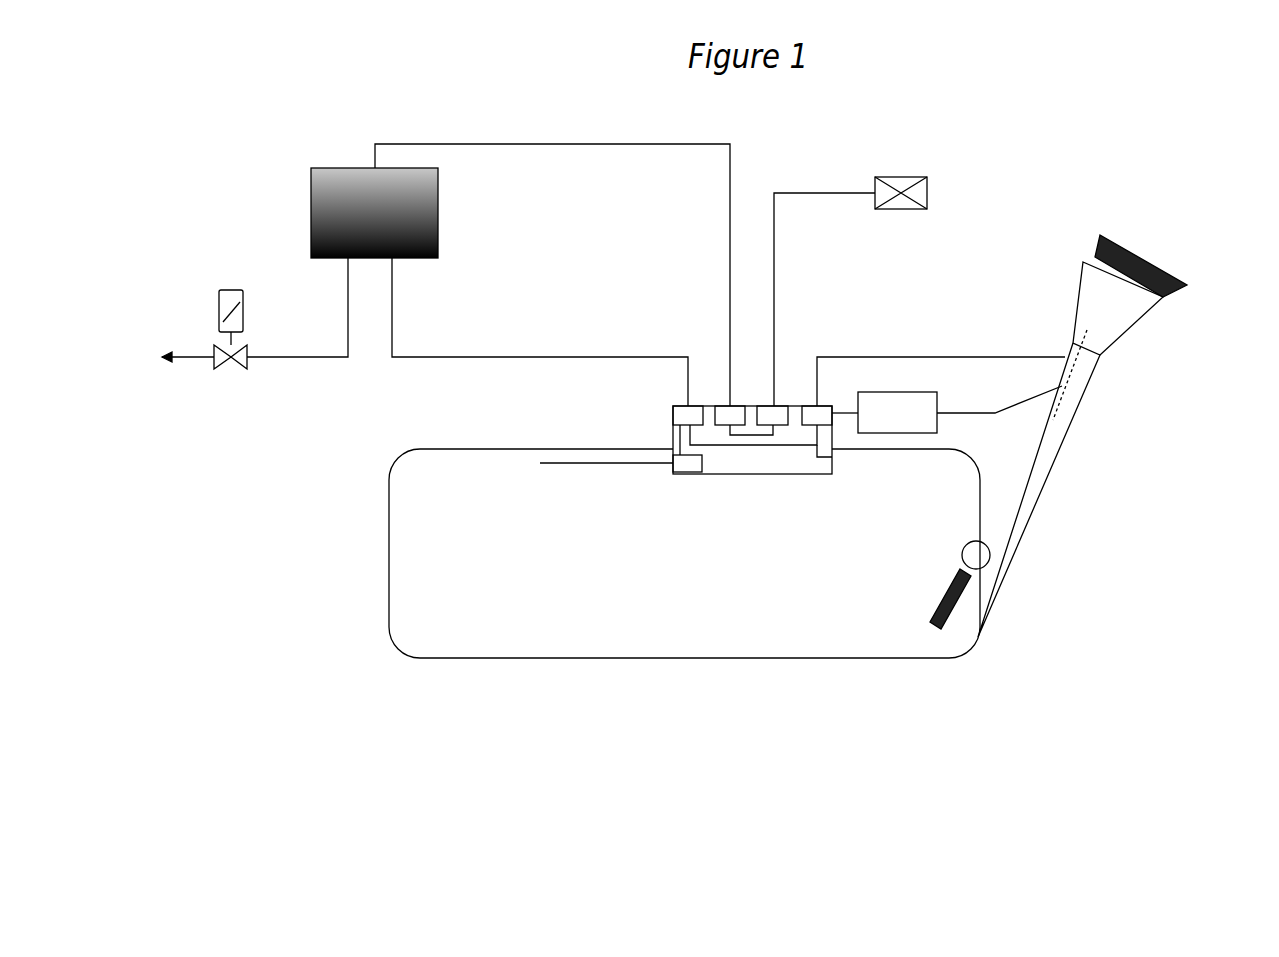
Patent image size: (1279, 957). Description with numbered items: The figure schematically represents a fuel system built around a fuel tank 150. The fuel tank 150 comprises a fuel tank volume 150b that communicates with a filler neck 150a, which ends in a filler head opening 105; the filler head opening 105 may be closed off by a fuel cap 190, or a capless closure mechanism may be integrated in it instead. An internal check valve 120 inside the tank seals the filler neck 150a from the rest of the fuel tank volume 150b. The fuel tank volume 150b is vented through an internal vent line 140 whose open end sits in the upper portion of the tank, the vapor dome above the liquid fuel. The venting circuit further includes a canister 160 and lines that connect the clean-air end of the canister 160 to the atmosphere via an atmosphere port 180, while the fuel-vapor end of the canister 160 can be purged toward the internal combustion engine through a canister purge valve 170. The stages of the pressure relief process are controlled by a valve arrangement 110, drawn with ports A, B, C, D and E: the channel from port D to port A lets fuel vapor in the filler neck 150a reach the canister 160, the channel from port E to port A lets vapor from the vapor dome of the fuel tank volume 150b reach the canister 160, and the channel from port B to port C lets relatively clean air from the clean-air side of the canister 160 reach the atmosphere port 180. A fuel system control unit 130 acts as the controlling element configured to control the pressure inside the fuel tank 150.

The filler head opening 105 is at (1113, 272).
The valve arrangement 110 is at (810, 450).
The internal check valve 120 is at (963, 608).
The fuel system control unit 130 is at (897, 412).
The internal vent line 140 is at (578, 465).
The fuel tank 150 is at (983, 660).
The filler neck 150a is at (996, 523).
The fuel tank volume 150b is at (413, 570).
The canister 160 is at (310, 212).
The canister purge valve 170 is at (218, 302).
The atmosphere port 180 is at (933, 183).
The fuel cap 190 is at (1165, 287).